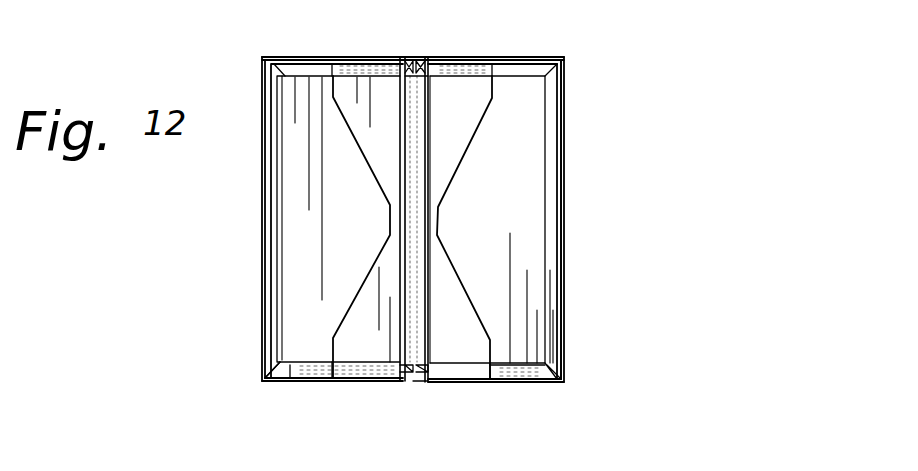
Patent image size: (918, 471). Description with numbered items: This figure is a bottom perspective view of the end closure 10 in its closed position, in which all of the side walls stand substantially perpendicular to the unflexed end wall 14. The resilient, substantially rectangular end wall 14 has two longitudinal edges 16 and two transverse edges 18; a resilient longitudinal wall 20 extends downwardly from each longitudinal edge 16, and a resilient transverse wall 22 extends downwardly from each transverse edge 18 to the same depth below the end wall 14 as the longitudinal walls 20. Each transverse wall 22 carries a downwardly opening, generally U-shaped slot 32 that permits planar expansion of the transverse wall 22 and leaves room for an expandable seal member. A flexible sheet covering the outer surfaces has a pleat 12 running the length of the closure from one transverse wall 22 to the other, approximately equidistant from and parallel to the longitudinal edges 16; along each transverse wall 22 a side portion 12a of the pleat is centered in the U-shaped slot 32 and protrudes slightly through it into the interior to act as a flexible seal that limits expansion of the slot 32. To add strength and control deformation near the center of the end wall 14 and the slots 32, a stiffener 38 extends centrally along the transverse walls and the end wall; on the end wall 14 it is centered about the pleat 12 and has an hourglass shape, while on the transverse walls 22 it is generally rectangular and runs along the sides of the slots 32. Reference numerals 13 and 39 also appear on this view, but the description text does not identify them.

The end closure 10 is at (633, 265).
The pleat 12 is at (411, 97).
The side portion of the pleat 12a is at (412, 383).
The top rail of second half 13 is at (510, 112).
The end wall 14 is at (515, 160).
The longitudinal edges 16 is at (547, 187).
The transverse edges 18 is at (287, 381).
The longitudinal wall 20 is at (552, 220).
The transverse wall 22 is at (508, 382).
The U-shaped slot 32 is at (447, 383).
The stiffener 38 is at (448, 97).
The bottom corner of second half 39 is at (553, 383).